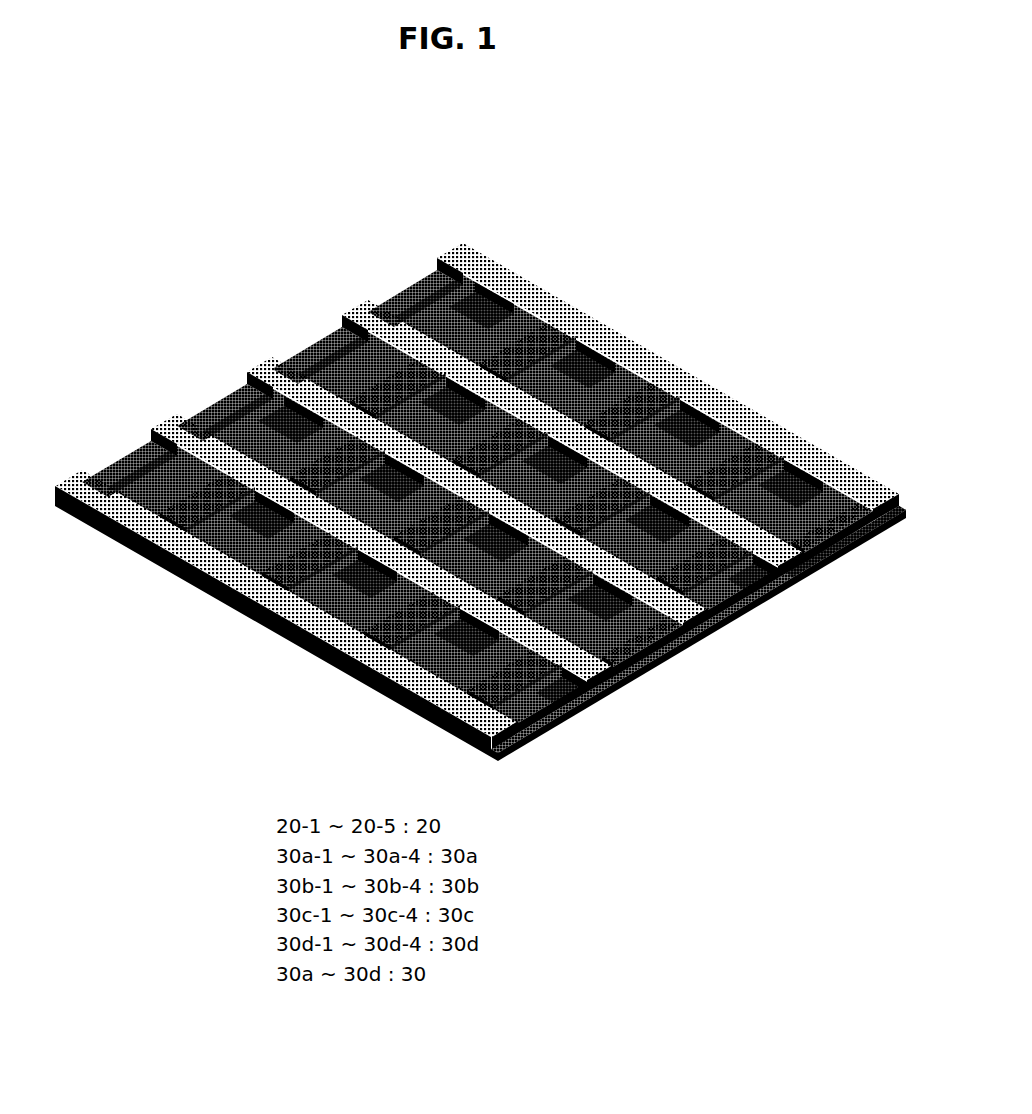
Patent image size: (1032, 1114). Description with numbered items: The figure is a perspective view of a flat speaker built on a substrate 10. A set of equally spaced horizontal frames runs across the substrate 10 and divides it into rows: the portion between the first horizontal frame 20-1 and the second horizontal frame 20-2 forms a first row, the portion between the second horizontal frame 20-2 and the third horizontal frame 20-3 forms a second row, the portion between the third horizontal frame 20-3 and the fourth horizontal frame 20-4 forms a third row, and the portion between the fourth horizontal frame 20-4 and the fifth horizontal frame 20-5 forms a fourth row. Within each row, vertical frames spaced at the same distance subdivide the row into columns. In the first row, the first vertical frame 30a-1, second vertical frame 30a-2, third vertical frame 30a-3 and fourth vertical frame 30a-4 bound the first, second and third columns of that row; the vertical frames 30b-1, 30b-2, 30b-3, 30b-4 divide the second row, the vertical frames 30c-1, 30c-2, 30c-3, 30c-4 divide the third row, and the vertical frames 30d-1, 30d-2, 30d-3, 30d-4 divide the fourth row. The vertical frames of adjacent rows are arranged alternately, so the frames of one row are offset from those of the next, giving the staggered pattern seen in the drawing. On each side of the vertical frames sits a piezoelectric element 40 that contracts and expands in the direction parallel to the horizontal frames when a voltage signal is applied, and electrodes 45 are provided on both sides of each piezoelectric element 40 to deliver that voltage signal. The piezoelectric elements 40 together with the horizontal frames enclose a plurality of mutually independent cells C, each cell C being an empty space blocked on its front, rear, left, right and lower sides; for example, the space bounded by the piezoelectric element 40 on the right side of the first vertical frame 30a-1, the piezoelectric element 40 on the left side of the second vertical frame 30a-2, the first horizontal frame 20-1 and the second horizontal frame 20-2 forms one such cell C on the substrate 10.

The substrate 10 is at (563, 697).
The first horizontal frame 20-1 is at (447, 242).
The second horizontal frame 20-2 is at (350, 303).
The third horizontal frame 20-3 is at (257, 355).
The fourth horizontal frame 20-4 is at (163, 417).
The fifth horizontal frame 20-5 is at (73, 467).
The first vertical frame 30a-1 is at (527, 313).
The second vertical frame 30a-2 is at (630, 377).
The third vertical frame 30a-3 is at (740, 440).
The fourth vertical frame 30a-4 is at (837, 520).
The vertical frame 30b-1 is at (347, 367).
The vertical frame 30b-2 is at (485, 408).
The vertical frame 30b-3 is at (590, 465).
The vertical frame 30b-4 is at (700, 527).
The vertical frame 30c-1 is at (237, 497).
The vertical frame 30c-2 is at (335, 600).
The vertical frame 30c-3 is at (590, 605).
The vertical frame 30c-4 is at (657, 617).
The vertical frame 30d-1 is at (123, 500).
The vertical frame 30d-2 is at (247, 550).
The vertical frame 30d-3 is at (353, 605).
The vertical frame 30d-4 is at (500, 647).
The piezoelectric element 40 is at (720, 563).
The electrode 45 is at (740, 567).
The cell C is at (470, 302).